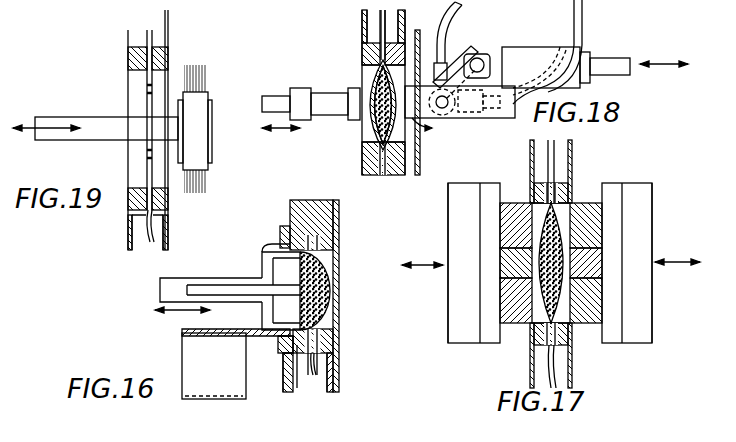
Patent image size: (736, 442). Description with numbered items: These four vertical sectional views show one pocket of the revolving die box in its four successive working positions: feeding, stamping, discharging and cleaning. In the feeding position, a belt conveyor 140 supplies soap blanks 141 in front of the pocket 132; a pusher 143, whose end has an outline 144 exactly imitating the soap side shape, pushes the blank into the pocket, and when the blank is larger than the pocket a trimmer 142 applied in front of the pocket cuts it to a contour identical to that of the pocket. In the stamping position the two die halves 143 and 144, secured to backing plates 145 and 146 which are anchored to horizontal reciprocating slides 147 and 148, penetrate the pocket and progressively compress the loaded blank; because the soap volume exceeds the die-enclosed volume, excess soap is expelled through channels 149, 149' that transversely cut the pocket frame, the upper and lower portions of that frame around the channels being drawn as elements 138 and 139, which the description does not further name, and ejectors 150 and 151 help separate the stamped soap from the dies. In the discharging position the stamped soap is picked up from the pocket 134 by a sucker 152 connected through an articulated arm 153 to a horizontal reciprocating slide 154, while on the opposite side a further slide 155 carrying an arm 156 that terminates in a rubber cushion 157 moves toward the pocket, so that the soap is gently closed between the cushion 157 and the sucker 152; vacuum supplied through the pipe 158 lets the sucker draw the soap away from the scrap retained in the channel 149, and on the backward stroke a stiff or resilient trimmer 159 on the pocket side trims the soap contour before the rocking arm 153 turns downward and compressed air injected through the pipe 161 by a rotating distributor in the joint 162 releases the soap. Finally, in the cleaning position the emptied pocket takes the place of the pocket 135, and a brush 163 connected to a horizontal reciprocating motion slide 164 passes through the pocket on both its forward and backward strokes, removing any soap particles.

In FIG. 16, the pocket 132 is at (336, 258).
In FIG. 18, the pocket 134 is at (363, 65).
In FIG. 19, the pocket 135 is at (138, 82).
In FIG. 17, the lower tube 138 is at (572, 150).
In FIG. 17, the upper tube 139 is at (532, 168).
In FIG. 16, the belt conveyor 140 is at (197, 333).
In FIG. 16, the soap blank 141 is at (320, 285).
In FIG. 16, the trimmer 142 is at (280, 240).
In FIG. 16, the pusher 143 is at (222, 282).
In FIG. 17, the pusher 143 is at (515, 312).
In FIG. 16, the die half 144 is at (290, 272).
In FIG. 17, the die half 144 is at (590, 300).
In FIG. 17, the backing plate 145 is at (490, 316).
In FIG. 17, the backing plate 146 is at (612, 330).
In FIG. 17, the horizontal reciprocating slide 147 is at (458, 288).
In FIG. 17, the horizontal reciprocating slide 148 is at (638, 325).
In FIG. 18, the channel 149 is at (351, 35).
In FIG. 17, the channel 149 is at (582, 171).
In FIG. 17, the channel 149' is at (583, 365).
In FIG. 17, the ejector 150 is at (505, 262).
In FIG. 17, the ejector 151 is at (590, 262).
In FIG. 18, the sucker 152 is at (420, 120).
In FIG. 18, the articulated arm 153 is at (425, 90).
In FIG. 18, the horizontal reciprocating slide 154 is at (594, 40).
In FIG. 18, the slide 155 is at (300, 95).
In FIG. 18, the arm 156 is at (335, 100).
In FIG. 18, the cushion 157 is at (365, 122).
In FIG. 18, the pipe 158 is at (568, 45).
In FIG. 18, the trimmer 159 is at (418, 165).
In FIG. 18, the pipe 161 is at (450, 33).
In FIG. 18, the joint 162 is at (450, 110).
In FIG. 19, the brush 163 is at (197, 135).
In FIG. 19, the horizontal reciprocating motion slide 164 is at (103, 122).